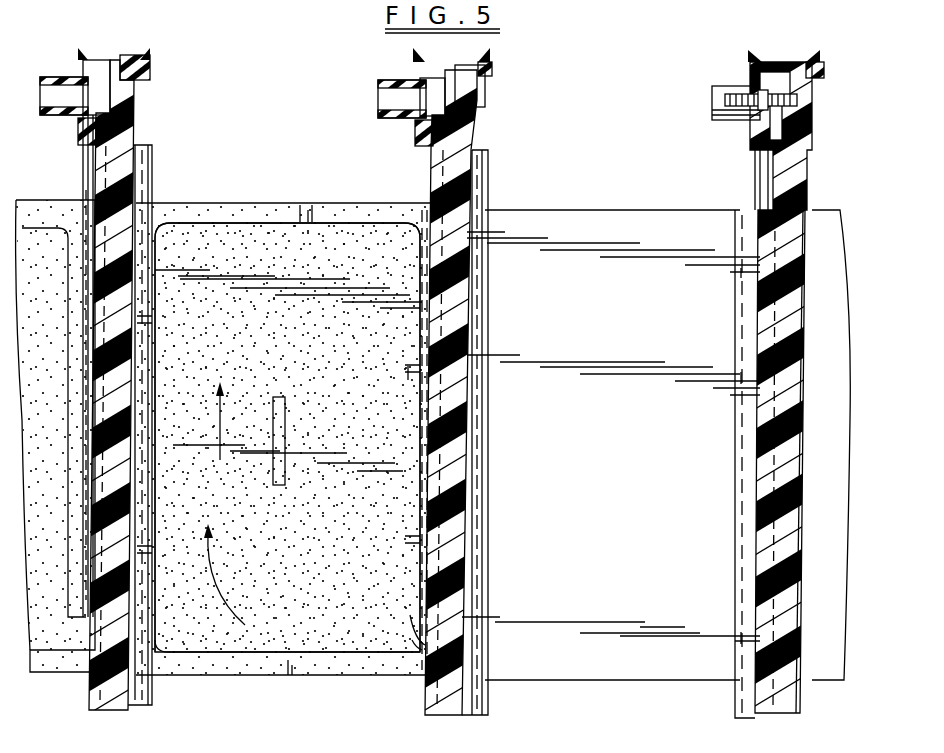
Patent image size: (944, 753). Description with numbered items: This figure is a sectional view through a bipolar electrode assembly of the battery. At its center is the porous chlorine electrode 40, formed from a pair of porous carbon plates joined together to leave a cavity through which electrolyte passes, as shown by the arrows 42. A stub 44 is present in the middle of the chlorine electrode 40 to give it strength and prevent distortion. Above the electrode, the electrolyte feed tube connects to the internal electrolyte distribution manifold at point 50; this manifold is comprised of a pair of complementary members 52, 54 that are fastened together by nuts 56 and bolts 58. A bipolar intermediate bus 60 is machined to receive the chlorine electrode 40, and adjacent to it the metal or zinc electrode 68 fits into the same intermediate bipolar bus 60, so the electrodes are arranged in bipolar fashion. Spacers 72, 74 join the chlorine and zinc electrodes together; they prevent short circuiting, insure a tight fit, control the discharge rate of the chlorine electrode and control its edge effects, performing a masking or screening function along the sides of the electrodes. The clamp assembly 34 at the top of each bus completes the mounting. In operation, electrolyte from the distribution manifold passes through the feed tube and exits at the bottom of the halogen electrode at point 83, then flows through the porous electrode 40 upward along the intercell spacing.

The clamp assembly 34 is at (112, 75).
The porous chlorine electrode 40 is at (40, 200).
The arrows 42 is at (222, 410).
The stub 44 is at (288, 418).
The point 50 is at (78, 135).
The complementary member 52 is at (55, 77).
The complementary member 54 is at (492, 72).
The nut 56 is at (752, 112).
The bolt 58 is at (798, 100).
The bipolar intermediate bus 60 is at (470, 160).
The zinc electrode 68 is at (648, 464).
The spacer 72 is at (140, 693).
The spacer 74 is at (735, 700).
The point 83 is at (85, 618).